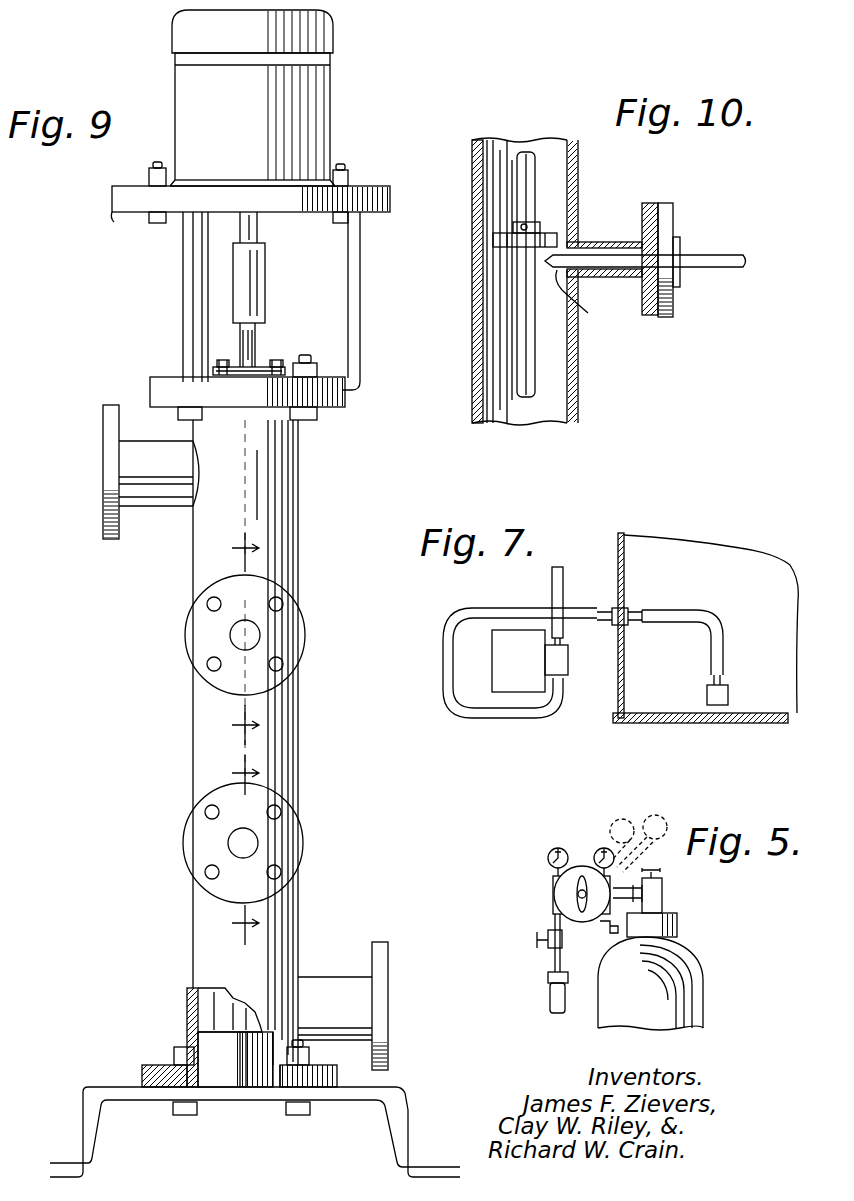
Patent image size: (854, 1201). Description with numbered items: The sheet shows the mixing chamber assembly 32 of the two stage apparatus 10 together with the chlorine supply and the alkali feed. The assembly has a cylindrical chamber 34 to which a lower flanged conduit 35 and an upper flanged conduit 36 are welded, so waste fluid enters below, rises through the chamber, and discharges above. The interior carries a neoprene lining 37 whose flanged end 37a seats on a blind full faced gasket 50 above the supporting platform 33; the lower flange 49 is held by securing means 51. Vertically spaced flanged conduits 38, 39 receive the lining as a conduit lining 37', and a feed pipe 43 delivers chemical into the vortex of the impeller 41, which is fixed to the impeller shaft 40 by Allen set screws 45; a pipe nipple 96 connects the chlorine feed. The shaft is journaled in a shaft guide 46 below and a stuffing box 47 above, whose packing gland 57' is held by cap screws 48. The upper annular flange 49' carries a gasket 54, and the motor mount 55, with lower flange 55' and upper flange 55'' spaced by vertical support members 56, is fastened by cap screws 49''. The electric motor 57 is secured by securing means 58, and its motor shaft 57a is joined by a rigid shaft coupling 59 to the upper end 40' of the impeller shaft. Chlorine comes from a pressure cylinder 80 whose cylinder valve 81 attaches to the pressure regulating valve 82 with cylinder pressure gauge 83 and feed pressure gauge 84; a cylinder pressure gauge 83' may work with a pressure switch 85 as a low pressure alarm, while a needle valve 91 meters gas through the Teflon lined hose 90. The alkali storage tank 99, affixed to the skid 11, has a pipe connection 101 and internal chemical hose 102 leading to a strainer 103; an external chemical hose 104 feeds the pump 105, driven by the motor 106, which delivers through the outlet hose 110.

In FIG. 9, the electric motor 57 is at (252, 98).
In FIG. 9, the securing means 58 is at (148, 178).
In FIG. 9, the upper flange construction 55'' is at (242, 216).
In FIG. 9, the motor shaft 57a is at (258, 230).
In FIG. 9, the vertical support members 56 is at (183, 266).
In FIG. 9, the motor mount 55 is at (252, 301).
In FIG. 9, the rigid shaft coupling 59 is at (266, 272).
In FIG. 9, the upper end of impeller shaft 40' is at (191, 340).
In FIG. 9, the packing gland 57' is at (271, 330).
In FIG. 9, the stuffing box 47 is at (256, 367).
In FIG. 9, the cap screws 48 is at (217, 362).
In FIG. 9, the lower flange construction 55' is at (193, 364).
In FIG. 9, the gasket 54 is at (150, 388).
In FIG. 9, the cap screws 49'' is at (235, 430).
In FIG. 9, the upper annular flange 49' is at (330, 424).
In FIG. 9, the upper flanged conduit 36 is at (158, 507).
In FIG. 9, the cylindrical chamber 34 is at (297, 542).
In FIG. 10, the cylindrical chamber 34 is at (578, 186).
In FIG. 9, the mixing chamber assembly 32 is at (304, 712).
In FIG. 9, the two stage apparatus 10 is at (245, 733).
In FIG. 9, the flanged conduit 39 is at (302, 622).
In FIG. 9, the flanged conduit 38 is at (302, 845).
In FIG. 10, the flanged conduit 38 is at (607, 278).
In FIG. 9, the lower flanged conduit 35 is at (318, 975).
In FIG. 9, the neoprene lining 37 is at (162, 1037).
In FIG. 10, the neoprene lining 37 is at (590, 351).
In FIG. 9, the impeller shaft 40 is at (230, 999).
In FIG. 10, the impeller shaft 40 is at (566, 274).
In FIG. 9, the shaft guide 46 is at (220, 1075).
In FIG. 9, the blind full faced gasket 50 is at (251, 1088).
In FIG. 9, the flanged end of lining 37a is at (142, 1083).
In FIG. 9, the lower flange 49 is at (161, 1039).
In FIG. 9, the securing means 51 is at (178, 1114).
In FIG. 9, the supporting base or platform 33 is at (393, 1102).
In FIG. 9, the skid 11 is at (416, 1147).
In FIG. 10, the Allen set screws 45 is at (521, 226).
In FIG. 10, the impeller 41 is at (500, 253).
In FIG. 10, the conduit lining 37' is at (604, 240).
In FIG. 10, the feed pipe 43 is at (584, 302).
In FIG. 10, the pipe nipple 96 is at (713, 267).
In FIG. 7, the alkali storage tank 99 is at (688, 579).
In FIG. 7, the chemical hose 104 is at (494, 716).
In FIG. 7, the motor 106 is at (532, 669).
In FIG. 7, the pump 105 is at (568, 672).
In FIG. 7, the outlet hose 110 is at (552, 583).
In FIG. 7, the pipe connection 101 is at (612, 624).
In FIG. 7, the chemical hose 102 is at (692, 610).
In FIG. 7, the strainer 103 is at (728, 695).
In FIG. 5, the chlorine pressure cylinder 80 is at (703, 975).
In FIG. 5, the cylinder valve 81 is at (662, 905).
In FIG. 5, the pressure regulating valve 82 is at (577, 866).
In FIG. 5, the cylinder pressure gauge 83 is at (598, 833).
In FIG. 5, the feed pressure gauge 84 is at (548, 856).
In FIG. 5, the pressure switch 85 is at (624, 823).
In FIG. 5, the cylinder pressure gauge 83' is at (648, 829).
In FIG. 5, the needle valve 91 is at (536, 941).
In FIG. 5, the Teflon lined hose 90 is at (550, 1002).